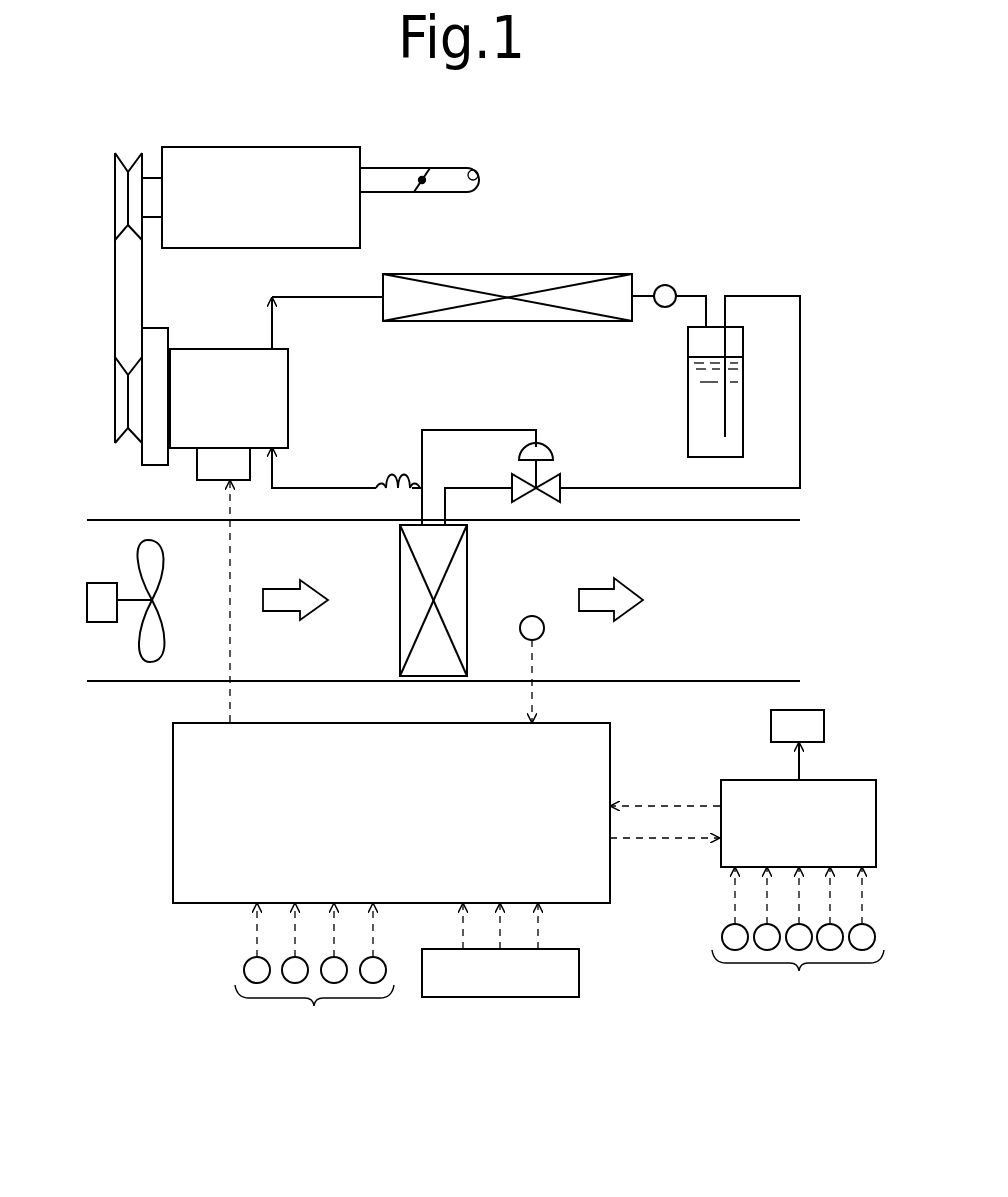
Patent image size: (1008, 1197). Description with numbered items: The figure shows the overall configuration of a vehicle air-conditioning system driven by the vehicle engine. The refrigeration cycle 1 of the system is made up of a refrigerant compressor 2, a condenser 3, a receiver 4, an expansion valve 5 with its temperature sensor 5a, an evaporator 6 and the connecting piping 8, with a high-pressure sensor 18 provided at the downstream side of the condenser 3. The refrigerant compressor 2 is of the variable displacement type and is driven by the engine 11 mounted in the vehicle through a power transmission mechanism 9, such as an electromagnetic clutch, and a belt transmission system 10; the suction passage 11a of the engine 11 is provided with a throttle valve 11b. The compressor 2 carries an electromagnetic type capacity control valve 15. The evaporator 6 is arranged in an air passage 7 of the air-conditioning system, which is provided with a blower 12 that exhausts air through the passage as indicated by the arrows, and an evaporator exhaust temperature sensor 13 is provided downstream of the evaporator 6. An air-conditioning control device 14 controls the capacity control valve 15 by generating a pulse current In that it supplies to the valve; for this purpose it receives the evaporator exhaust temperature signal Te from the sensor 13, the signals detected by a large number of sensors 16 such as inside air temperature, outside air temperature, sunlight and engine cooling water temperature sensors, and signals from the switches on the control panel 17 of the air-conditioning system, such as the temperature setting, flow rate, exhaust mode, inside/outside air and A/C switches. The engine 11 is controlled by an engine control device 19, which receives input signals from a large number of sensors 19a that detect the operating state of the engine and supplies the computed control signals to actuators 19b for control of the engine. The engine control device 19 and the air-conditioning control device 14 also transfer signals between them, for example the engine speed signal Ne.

The refrigeration cycle 1 is at (730, 288).
The refrigerant compressor 2 is at (282, 372).
The condenser 3 is at (517, 282).
The receiver 4 is at (697, 414).
The expansion valve 5 is at (560, 482).
The temperature sensor 5a is at (392, 475).
The evaporator 6 is at (410, 577).
The air passage 7 is at (117, 682).
The piping 8 is at (313, 297).
The power transmission mechanism 9 is at (146, 452).
The belt transmission system 10 is at (126, 285).
The engine 11 is at (357, 159).
The suction passage 11a is at (479, 173).
The throttle valve 11b is at (427, 193).
The blower 12 is at (147, 551).
The evaporator exhaust temperature sensor 13 is at (532, 616).
The air-conditioning control device 14 is at (181, 815).
The capacity control valve 15 is at (207, 463).
The sensors 16 is at (314, 975).
The control panel 17 is at (572, 980).
The high-pressure sensor 18 is at (661, 285).
The engine control device 19 is at (853, 785).
The sensors 19a is at (798, 939).
The actuators 19b is at (813, 711).